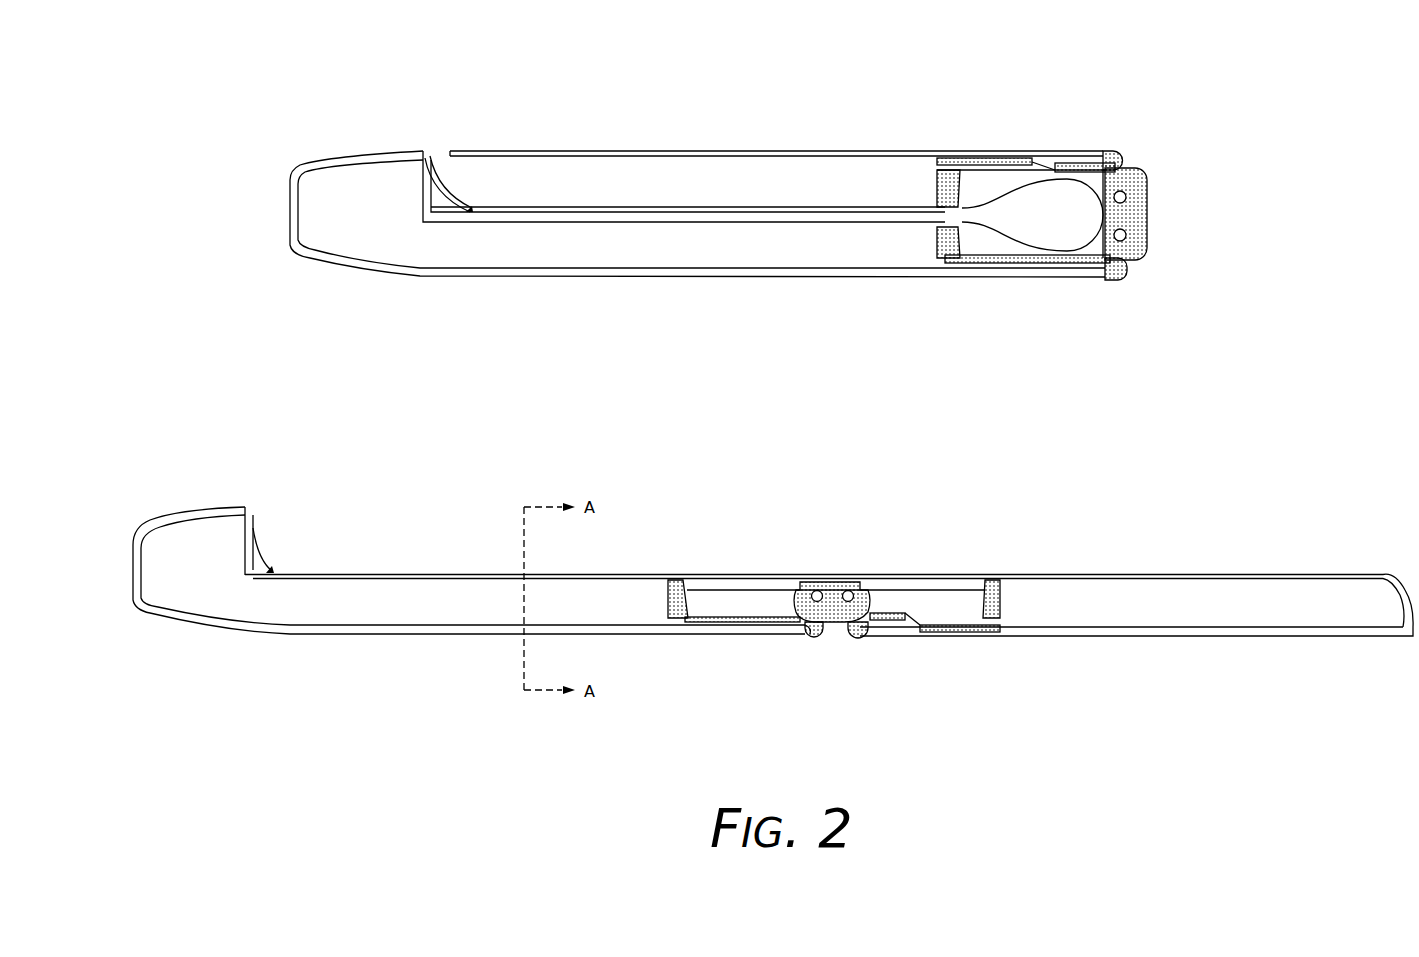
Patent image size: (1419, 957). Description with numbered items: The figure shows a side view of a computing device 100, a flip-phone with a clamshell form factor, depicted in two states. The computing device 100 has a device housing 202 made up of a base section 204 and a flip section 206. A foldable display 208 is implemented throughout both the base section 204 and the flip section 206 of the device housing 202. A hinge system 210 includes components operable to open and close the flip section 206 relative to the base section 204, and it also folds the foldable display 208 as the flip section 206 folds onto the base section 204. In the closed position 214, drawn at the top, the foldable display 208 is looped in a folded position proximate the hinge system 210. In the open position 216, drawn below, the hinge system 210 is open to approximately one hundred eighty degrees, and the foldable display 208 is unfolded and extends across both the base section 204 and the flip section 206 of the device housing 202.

The computing device 100 is at (510, 133).
The device housing 202 is at (587, 280).
The base section 204 is at (755, 252).
The flip section 206 is at (778, 170).
The foldable display 208 is at (1060, 224).
The hinge system 210 is at (1143, 158).
The closed position 214 is at (260, 135).
The open position 216 is at (116, 503).